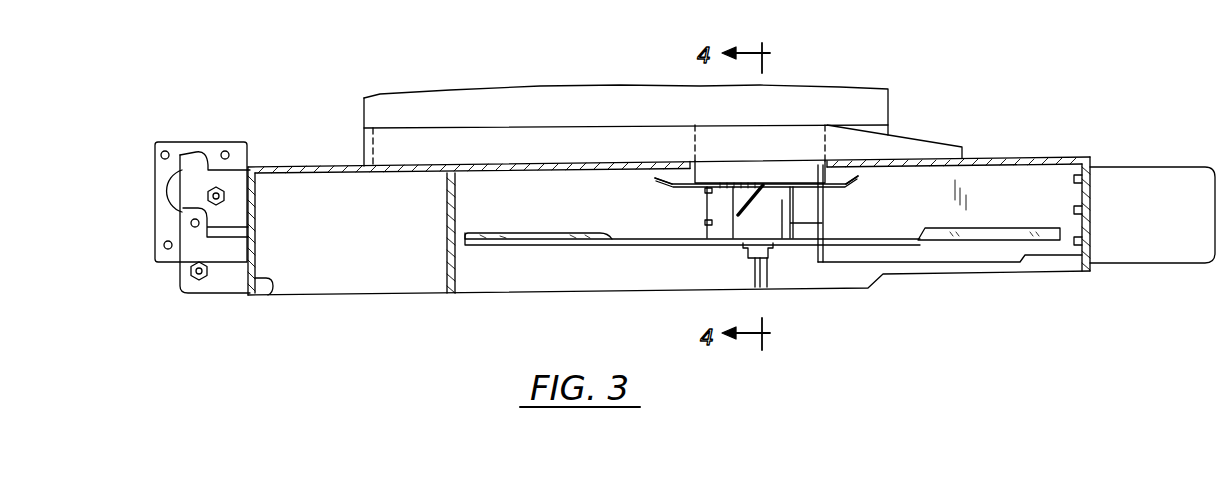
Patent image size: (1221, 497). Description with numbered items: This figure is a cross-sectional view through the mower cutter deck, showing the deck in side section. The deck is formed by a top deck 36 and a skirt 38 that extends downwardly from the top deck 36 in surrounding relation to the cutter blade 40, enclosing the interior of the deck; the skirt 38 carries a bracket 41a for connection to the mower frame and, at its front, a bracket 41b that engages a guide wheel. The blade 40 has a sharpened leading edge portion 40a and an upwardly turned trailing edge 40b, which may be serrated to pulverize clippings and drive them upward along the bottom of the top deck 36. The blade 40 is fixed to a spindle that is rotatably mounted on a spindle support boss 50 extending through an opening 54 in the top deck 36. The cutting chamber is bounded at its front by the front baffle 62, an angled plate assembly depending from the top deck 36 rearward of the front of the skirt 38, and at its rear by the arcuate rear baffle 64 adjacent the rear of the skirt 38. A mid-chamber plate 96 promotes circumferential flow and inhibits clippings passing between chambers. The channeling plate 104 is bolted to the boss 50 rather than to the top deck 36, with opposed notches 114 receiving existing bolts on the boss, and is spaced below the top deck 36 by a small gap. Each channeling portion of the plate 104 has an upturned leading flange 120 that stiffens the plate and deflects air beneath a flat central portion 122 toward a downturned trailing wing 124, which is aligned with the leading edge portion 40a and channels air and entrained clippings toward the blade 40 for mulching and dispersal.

The top deck 36 is at (320, 128).
The skirt 38 is at (272, 290).
The mower cutter blade 40 is at (613, 247).
The sharpened leading edge portion 40a is at (500, 248).
The upwardly turned trailing edge 40b is at (1000, 235).
The bracket 41a is at (205, 150).
The bracket 41b is at (1165, 167).
The spindle support boss 50 is at (792, 175).
The opening 54 is at (697, 163).
The front baffle 62 is at (978, 252).
The rear baffle 64 is at (447, 257).
The mid-chamber plate 96 is at (706, 223).
The channeling plate 104 is at (664, 193).
The notch 114 is at (747, 227).
The upturned leading flange 120 is at (669, 183).
The central portion 122 is at (768, 195).
The downturned trailing wing 124 is at (706, 203).